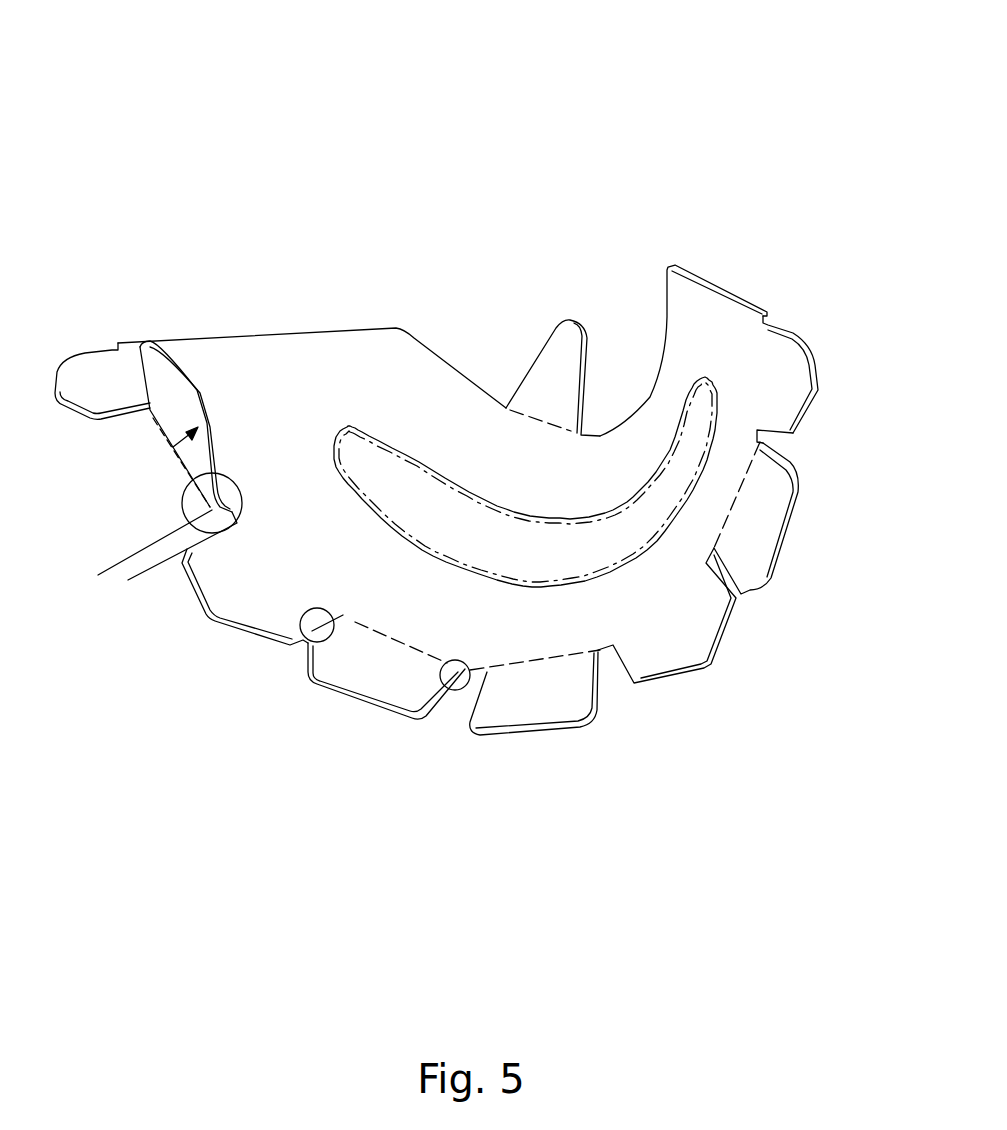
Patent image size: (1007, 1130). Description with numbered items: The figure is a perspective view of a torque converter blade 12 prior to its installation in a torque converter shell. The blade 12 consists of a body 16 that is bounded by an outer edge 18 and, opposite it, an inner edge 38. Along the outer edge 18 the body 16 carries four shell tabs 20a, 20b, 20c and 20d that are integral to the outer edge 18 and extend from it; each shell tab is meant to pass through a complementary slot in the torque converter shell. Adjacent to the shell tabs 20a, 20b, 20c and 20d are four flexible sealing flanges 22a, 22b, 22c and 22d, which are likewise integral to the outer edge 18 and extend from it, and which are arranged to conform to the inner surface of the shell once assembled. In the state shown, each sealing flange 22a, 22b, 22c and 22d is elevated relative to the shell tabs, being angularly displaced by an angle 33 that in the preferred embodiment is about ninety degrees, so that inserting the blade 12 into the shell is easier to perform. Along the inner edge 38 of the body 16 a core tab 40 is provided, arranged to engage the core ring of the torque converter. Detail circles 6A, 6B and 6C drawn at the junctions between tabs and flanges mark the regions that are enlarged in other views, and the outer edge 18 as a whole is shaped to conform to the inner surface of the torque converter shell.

The torque converter blade 12 is at (536, 129).
The body 16 is at (265, 372).
The outer edge 18 is at (790, 448).
The shell tab 20a is at (88, 385).
The shell tab 20b is at (235, 603).
The shell tab 20c is at (690, 625).
The shell tab 20d is at (793, 374).
The flexible sealing flange 22a is at (148, 390).
The flexible sealing flange 22b is at (380, 680).
The flexible sealing flange 22c is at (513, 695).
The flexible sealing flange 22d is at (752, 517).
The angle 33 is at (129, 558).
The inner edge 38 is at (661, 307).
The core tab 40 is at (562, 345).
The detail circle 6A is at (305, 645).
The detail circle 6B is at (456, 693).
The detail circle 6C is at (150, 552).